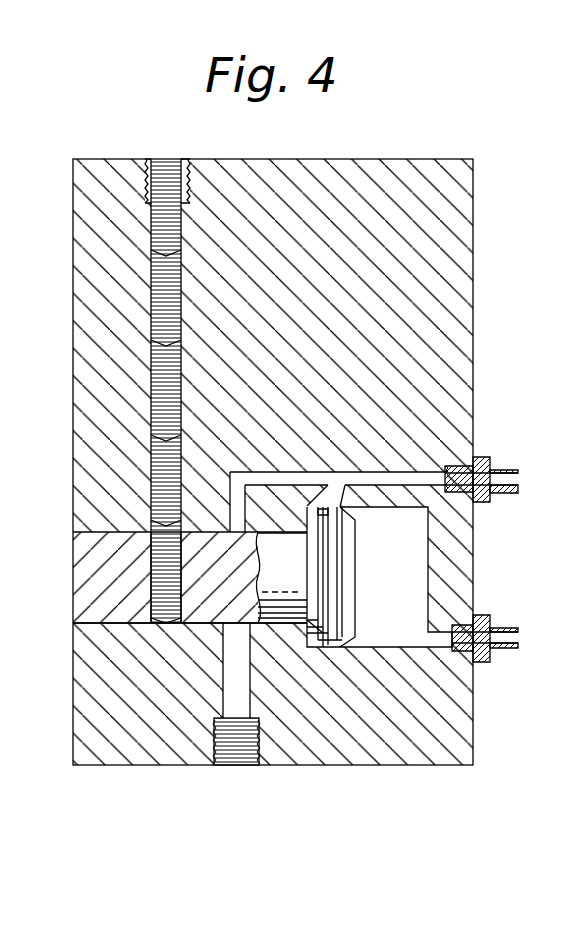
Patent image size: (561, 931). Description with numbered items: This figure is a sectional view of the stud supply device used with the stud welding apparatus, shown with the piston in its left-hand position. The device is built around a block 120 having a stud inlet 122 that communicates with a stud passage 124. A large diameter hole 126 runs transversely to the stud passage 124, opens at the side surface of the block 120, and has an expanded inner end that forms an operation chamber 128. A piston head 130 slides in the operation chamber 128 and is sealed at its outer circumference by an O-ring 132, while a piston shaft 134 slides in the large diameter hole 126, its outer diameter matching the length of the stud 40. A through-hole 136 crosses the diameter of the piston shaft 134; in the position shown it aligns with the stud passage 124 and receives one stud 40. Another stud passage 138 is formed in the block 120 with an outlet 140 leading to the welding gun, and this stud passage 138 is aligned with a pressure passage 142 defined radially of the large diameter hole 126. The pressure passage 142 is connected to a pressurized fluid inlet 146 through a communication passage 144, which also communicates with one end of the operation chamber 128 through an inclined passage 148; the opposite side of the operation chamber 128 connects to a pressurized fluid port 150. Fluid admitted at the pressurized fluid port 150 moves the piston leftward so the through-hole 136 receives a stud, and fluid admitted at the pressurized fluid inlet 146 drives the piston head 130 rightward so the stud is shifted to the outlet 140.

The stud 40 is at (152, 470).
The block 120 is at (474, 246).
The stud inlet 122 is at (182, 160).
The stud passage 124 is at (183, 258).
The large diameter hole 126 is at (108, 625).
The operation chamber 128 is at (412, 551).
The piston head 130 is at (357, 579).
The O-ring 132 is at (330, 648).
The piston shaft 134 is at (73, 584).
The through-hole 136 is at (182, 577).
The stud passage 138 is at (244, 673).
The outlet 140 is at (246, 762).
The pressure passage 142 is at (231, 502).
The communication passage 144 is at (289, 473).
The pressurized fluid inlet 146 is at (500, 470).
The inclined passage 148 is at (322, 496).
The pressurized fluid port 150 is at (500, 626).